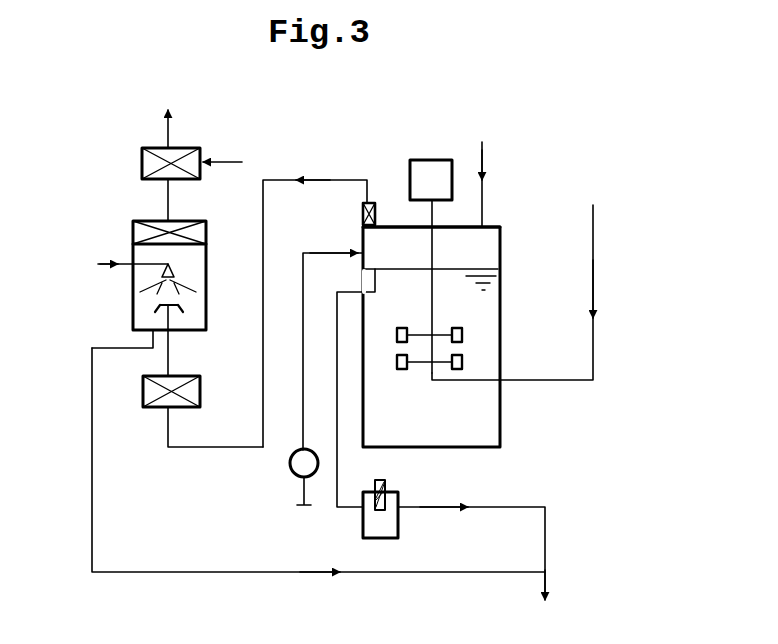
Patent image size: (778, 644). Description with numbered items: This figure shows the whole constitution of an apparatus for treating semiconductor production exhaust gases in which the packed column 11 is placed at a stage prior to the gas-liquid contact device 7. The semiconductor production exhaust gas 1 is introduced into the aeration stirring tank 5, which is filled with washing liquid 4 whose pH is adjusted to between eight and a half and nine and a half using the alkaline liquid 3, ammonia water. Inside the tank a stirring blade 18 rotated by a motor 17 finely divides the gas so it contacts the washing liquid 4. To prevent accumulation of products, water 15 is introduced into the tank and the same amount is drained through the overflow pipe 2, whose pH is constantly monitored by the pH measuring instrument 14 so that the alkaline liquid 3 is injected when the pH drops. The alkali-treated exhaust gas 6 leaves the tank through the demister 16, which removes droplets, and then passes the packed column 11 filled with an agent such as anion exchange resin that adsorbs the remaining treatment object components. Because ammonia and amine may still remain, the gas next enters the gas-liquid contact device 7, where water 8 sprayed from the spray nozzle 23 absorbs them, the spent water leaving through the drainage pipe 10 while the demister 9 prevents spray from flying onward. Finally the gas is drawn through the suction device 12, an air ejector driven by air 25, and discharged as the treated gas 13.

The semiconductor production exhaust gas 1 is at (594, 250).
The overflow pipe 2 is at (336, 312).
The alkaline liquid 3 is at (304, 491).
The washing liquid 4 is at (496, 430).
The aeration stirring tank 5 is at (500, 244).
The alkali-treated exhaust gas 6 is at (331, 178).
The gas-liquid contact device 7 is at (195, 320).
The water 8 is at (100, 265).
The demister 9 is at (133, 234).
The drainage pipe 10 is at (190, 571).
The packed column 11 is at (143, 393).
The suction device 12 is at (142, 168).
The treated gas 13 is at (168, 128).
The pH measuring instrument 14 is at (386, 483).
The water 15 is at (484, 160).
The demister 16 is at (363, 212).
The motor 17 is at (432, 160).
The stirring blade 18 is at (462, 335).
The spray nozzle 23 is at (174, 266).
The air 25 is at (220, 160).